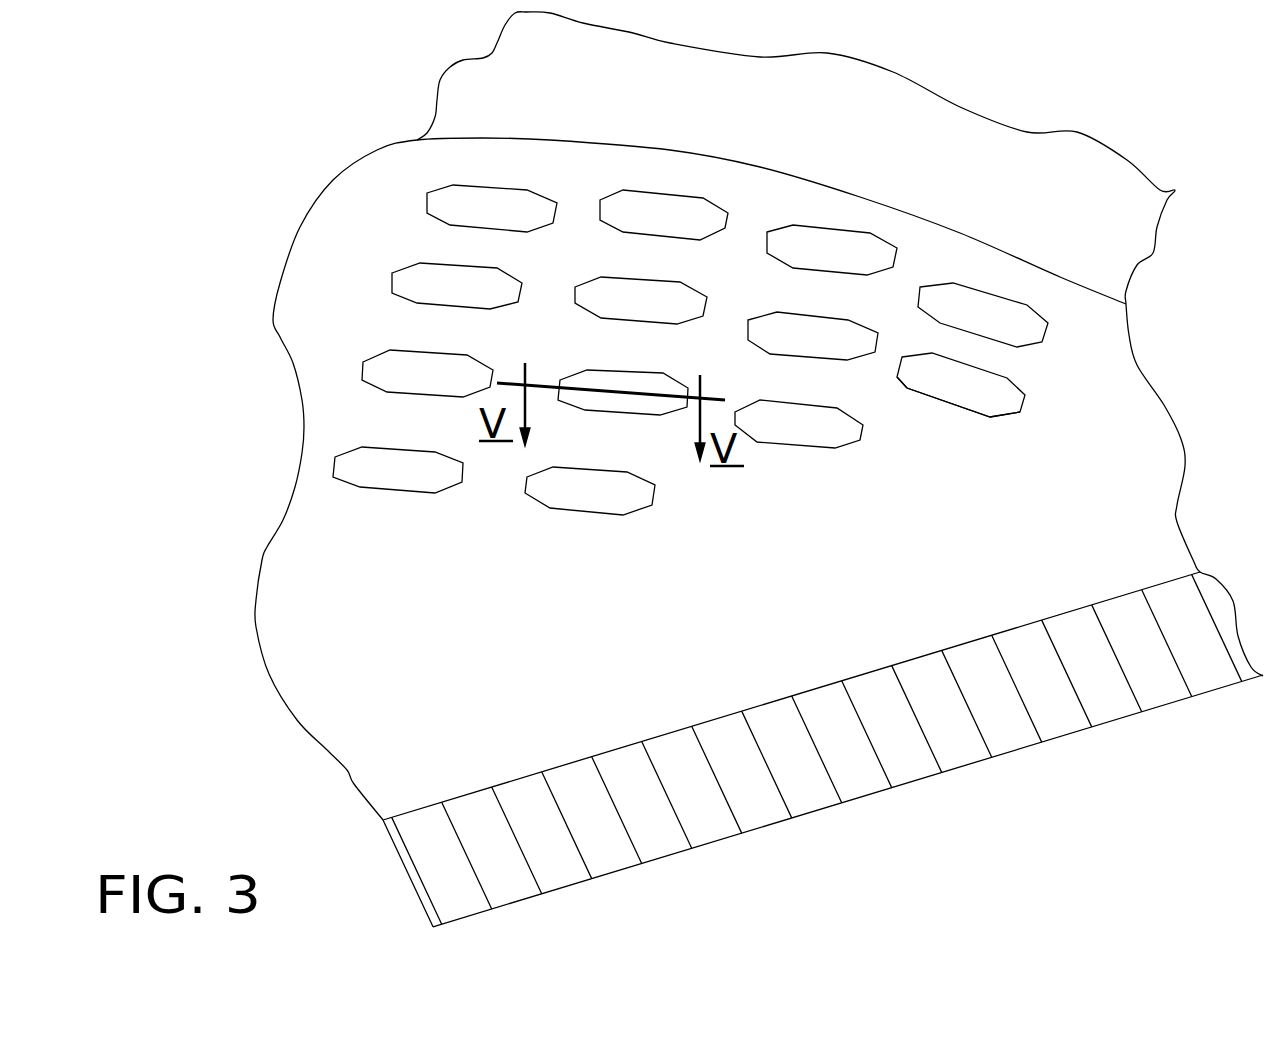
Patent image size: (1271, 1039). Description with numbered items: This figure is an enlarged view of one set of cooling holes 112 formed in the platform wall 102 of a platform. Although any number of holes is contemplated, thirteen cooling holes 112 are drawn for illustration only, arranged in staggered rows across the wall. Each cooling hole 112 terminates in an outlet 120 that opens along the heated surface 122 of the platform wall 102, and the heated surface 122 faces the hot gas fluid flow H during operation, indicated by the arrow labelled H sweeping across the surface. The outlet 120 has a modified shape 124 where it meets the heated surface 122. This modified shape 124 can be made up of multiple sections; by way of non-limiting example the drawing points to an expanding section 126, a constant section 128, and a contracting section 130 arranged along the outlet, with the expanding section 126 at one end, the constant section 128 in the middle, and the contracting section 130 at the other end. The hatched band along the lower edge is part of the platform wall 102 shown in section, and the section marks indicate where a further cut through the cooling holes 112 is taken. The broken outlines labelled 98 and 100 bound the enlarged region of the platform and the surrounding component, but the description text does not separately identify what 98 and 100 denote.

The component wall 98 is at (477, 137).
The component 100 is at (867, 88).
The platform wall 102 is at (930, 737).
The cooling holes 112 is at (783, 223).
The outlet 120 is at (952, 295).
The heated surface 122 is at (739, 634).
The modified shape 124 is at (1030, 348).
The expanding section 126 is at (903, 396).
The constant section 128 is at (953, 418).
The contracting section 130 is at (998, 436).
The hot gas fluid flow H is at (470, 603).